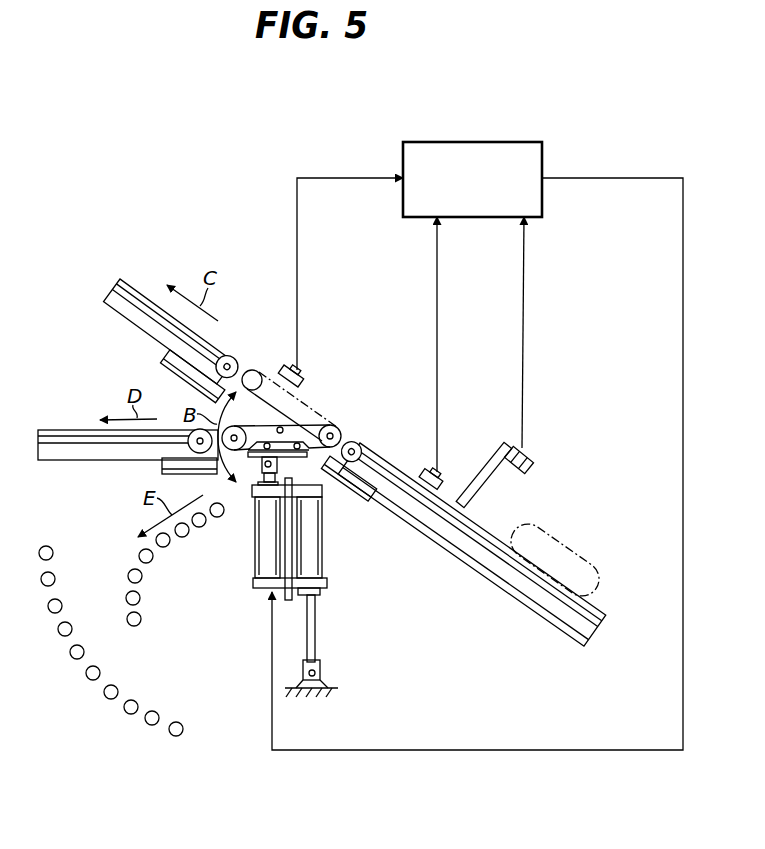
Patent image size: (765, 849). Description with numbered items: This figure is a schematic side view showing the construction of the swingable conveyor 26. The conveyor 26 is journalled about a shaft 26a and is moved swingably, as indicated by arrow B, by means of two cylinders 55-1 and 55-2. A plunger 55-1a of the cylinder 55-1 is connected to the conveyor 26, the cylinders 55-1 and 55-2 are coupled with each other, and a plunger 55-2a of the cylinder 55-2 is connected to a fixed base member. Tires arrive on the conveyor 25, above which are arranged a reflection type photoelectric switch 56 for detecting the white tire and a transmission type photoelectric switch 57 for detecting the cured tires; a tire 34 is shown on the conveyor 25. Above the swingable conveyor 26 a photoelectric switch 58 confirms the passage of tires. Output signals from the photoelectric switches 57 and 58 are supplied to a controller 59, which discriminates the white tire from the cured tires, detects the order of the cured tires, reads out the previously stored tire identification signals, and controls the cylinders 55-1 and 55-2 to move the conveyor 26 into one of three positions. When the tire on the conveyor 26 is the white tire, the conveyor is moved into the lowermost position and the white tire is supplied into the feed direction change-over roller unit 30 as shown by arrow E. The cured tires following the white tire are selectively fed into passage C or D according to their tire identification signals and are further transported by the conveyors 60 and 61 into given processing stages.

The controller 59 is at (478, 142).
The conveyor 60 is at (150, 295).
The conveyor 61 is at (65, 430).
The photoelectric switch 58 is at (300, 372).
The swingable conveyor 26 is at (316, 402).
The shaft 26a is at (334, 432).
The transmission type photoelectric switch 57 is at (430, 470).
The reflection type photoelectric switch 56 is at (530, 461).
The article 34 is at (560, 540).
The conveyor 25 is at (480, 572).
The cylinder 55-1 is at (254, 560).
The plunger 55-1a is at (260, 480).
The cylinder 55-2 is at (323, 548).
The plunger 55-2a is at (317, 630).
The feed direction change-over roller unit 30 is at (85, 684).